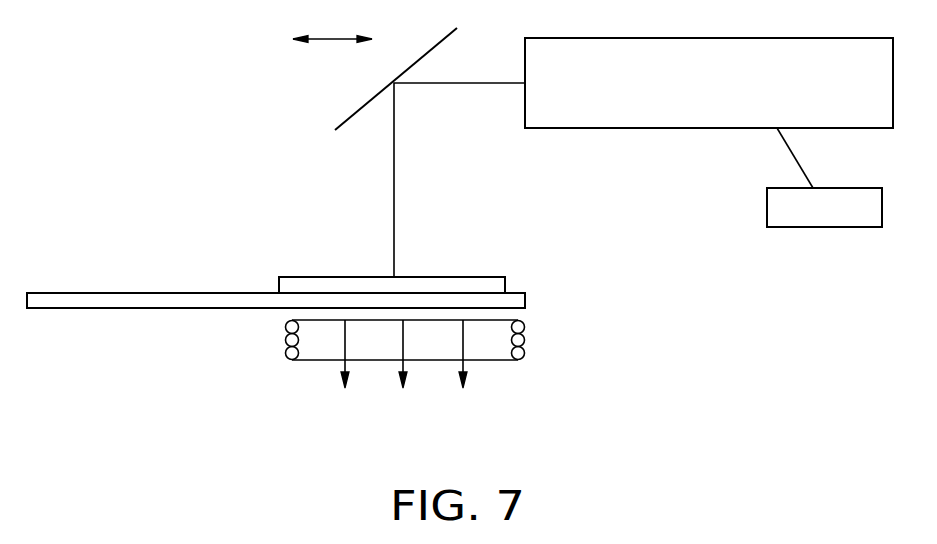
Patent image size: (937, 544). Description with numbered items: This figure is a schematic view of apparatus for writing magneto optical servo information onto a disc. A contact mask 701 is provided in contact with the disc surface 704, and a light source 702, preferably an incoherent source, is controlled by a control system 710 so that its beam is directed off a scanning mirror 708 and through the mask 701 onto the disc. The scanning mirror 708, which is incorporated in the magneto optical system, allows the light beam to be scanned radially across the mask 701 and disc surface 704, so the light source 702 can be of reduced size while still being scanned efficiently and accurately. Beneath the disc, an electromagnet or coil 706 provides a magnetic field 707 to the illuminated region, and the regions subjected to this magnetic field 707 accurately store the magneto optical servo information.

The contact mask 701 is at (505, 293).
The light source 702 is at (667, 128).
The disc surface 704 is at (525, 303).
The electromagnet 706 is at (523, 354).
The magnetic field 707 is at (435, 377).
The scanning mirror 708 is at (357, 110).
The control system 710 is at (783, 220).